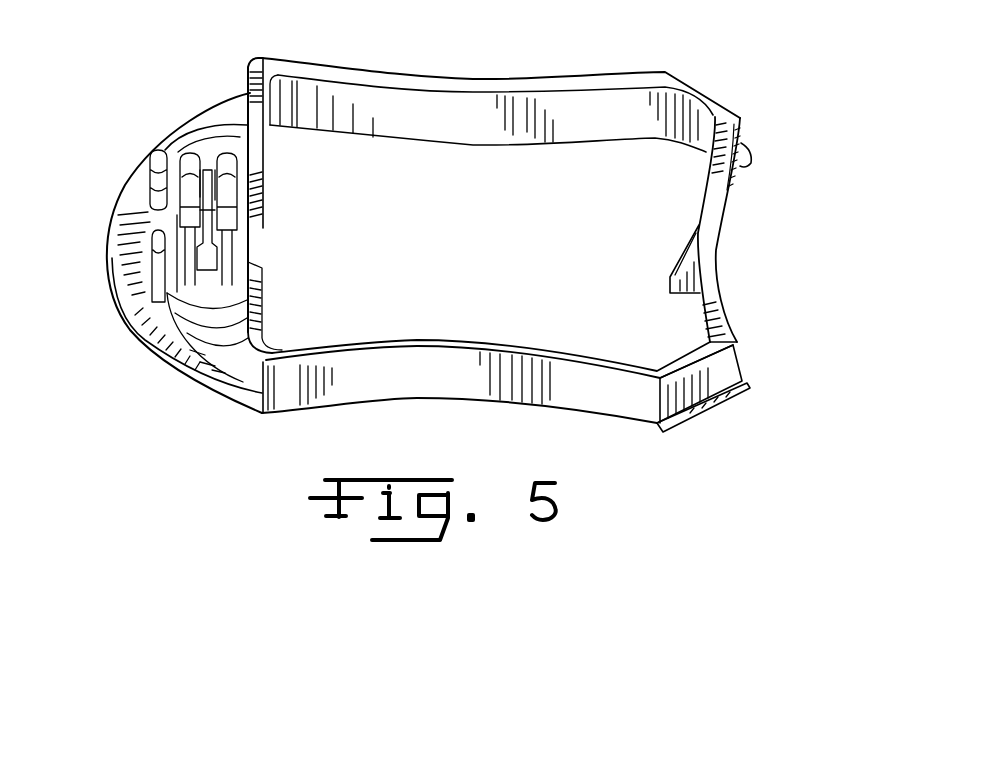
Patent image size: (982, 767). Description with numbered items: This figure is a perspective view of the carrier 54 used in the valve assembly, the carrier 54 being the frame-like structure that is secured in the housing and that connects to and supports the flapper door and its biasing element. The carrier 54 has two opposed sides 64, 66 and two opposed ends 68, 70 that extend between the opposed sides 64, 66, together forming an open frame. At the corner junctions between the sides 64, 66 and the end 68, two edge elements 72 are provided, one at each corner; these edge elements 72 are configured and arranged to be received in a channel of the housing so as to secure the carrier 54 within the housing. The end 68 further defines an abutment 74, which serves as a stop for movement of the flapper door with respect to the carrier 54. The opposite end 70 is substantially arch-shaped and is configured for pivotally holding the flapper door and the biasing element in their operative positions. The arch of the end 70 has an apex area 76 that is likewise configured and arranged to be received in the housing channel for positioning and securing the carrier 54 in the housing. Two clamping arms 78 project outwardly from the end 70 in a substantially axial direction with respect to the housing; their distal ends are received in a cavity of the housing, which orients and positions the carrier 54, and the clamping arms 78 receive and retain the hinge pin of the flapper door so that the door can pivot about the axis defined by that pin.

The carrier 54 is at (178, 72).
The side 64 is at (497, 90).
The side 66 is at (445, 340).
The end 68 is at (715, 300).
The end 70 is at (248, 95).
The edge element 72 is at (750, 152).
The abutment 74 is at (673, 262).
The apex area 76 is at (110, 265).
The clamping arm 78 is at (185, 193).